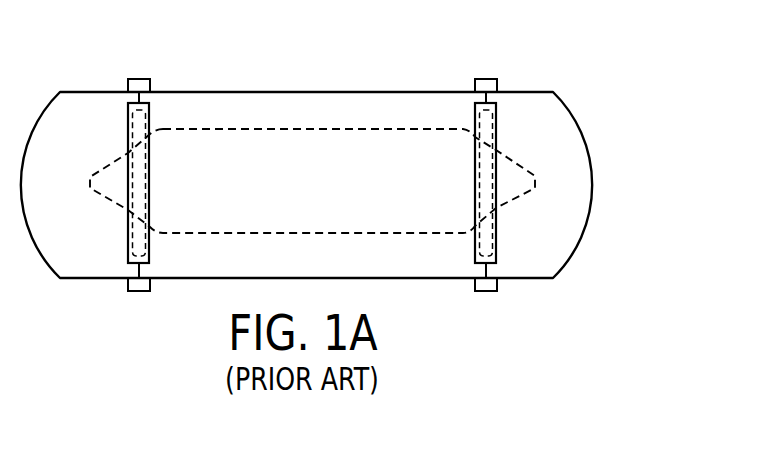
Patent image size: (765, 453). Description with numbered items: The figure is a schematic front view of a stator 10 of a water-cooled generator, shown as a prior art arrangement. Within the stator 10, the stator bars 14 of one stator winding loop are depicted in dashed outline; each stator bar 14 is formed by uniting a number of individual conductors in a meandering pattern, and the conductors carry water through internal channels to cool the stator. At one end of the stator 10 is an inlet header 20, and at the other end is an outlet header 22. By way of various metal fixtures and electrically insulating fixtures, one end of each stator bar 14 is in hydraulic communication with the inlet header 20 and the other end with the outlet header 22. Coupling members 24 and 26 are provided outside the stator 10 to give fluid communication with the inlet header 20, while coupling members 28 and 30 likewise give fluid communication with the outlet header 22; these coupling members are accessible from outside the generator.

The stator 10 is at (610, 58).
The stator bars 14 is at (263, 129).
The inlet header 20 is at (140, 131).
The outlet header 22 is at (490, 225).
The coupling member 24 is at (137, 79).
The coupling member 26 is at (143, 291).
The coupling member 28 is at (484, 79).
The coupling member 30 is at (488, 291).